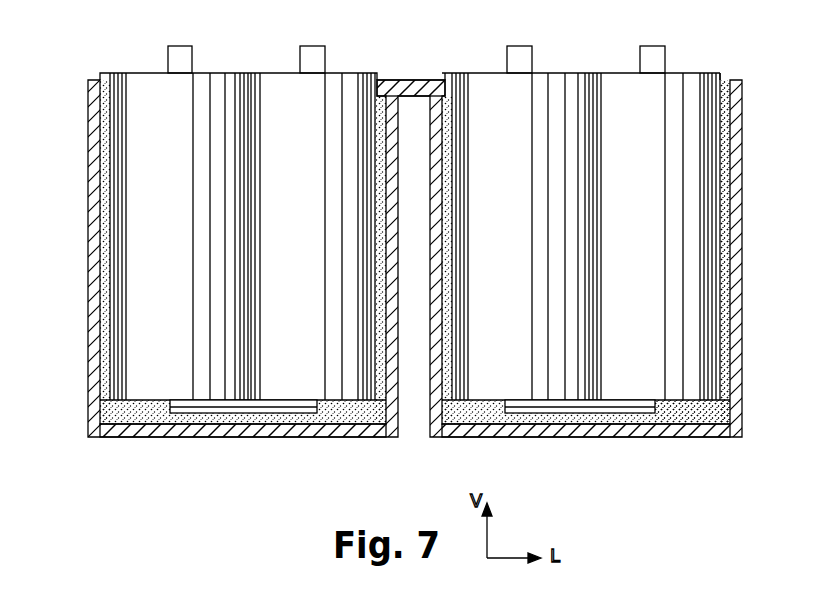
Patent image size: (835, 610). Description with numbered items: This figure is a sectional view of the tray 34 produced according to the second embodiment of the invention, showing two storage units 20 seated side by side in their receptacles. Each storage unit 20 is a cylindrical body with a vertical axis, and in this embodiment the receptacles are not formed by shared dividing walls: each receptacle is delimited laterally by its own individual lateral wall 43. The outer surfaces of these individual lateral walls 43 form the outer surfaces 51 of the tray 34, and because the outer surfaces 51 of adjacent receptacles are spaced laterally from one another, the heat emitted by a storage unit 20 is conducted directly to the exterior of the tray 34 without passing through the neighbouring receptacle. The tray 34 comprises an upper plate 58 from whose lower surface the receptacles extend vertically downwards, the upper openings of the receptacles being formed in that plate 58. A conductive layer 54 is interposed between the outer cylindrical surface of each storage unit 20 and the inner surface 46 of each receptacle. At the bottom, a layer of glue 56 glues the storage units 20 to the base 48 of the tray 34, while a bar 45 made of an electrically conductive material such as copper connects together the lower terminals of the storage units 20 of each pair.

The storage unit 20 is at (278, 77).
The tray 34 is at (537, 457).
The individual lateral wall 43 is at (416, 250).
The bar 45 is at (262, 415).
The inner surface of receptacle 46 is at (100, 117).
The base of the tray 48 is at (200, 437).
The outer surface of the tray 51 is at (92, 117).
The conductive layer 54 is at (722, 82).
The layer of glue 56 is at (685, 413).
The upper plate 58 is at (413, 82).